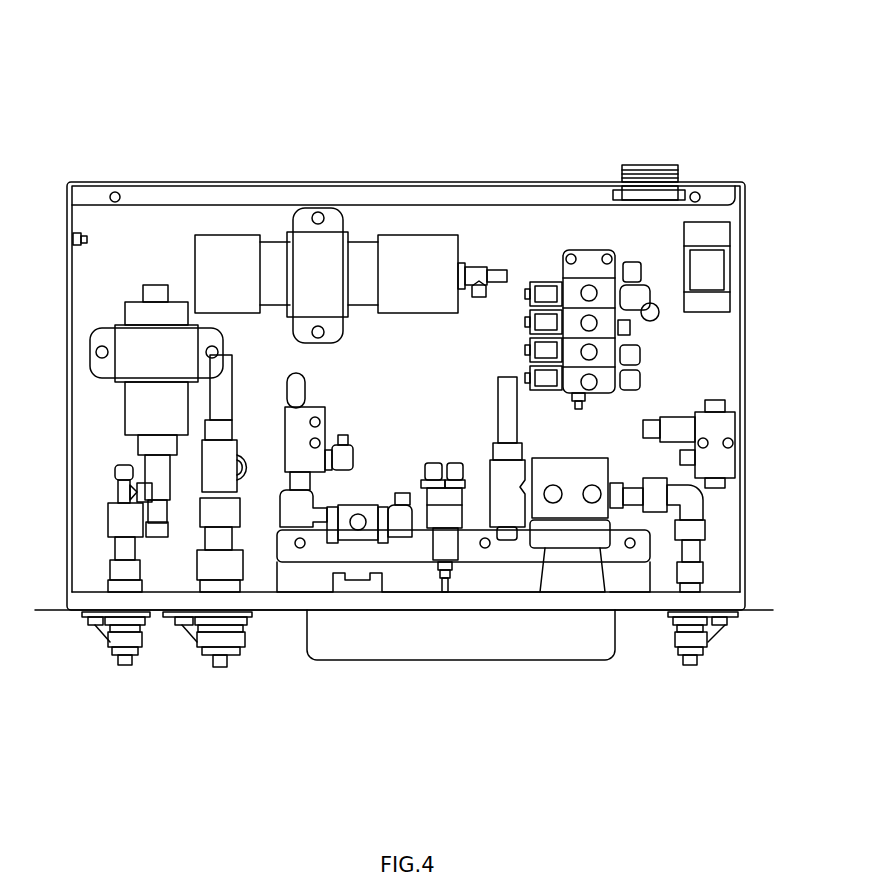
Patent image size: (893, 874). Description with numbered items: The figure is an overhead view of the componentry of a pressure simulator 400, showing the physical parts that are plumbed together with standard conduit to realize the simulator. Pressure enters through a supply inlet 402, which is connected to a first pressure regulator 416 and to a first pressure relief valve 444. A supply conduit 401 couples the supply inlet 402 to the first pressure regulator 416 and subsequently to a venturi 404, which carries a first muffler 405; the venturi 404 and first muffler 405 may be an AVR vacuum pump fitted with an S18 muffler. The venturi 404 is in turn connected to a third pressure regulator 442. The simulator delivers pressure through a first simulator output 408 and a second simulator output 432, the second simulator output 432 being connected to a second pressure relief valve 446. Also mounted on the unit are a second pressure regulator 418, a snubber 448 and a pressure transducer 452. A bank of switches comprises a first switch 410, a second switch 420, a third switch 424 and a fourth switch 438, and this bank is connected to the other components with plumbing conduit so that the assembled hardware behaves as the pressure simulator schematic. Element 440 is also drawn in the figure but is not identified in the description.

The pressure simulator 400 is at (90, 92).
The supply conduit 401 is at (700, 545).
The supply inlet 402 is at (700, 655).
The venturi 404 is at (328, 418).
The first muffler 405 is at (305, 388).
The first simulator output 408 is at (132, 668).
The first switch 410 is at (528, 364).
The first pressure regulator 416 is at (597, 520).
The second pressure regulator 418 is at (446, 565).
The second switch 420 is at (530, 343).
The third switch 424 is at (530, 313).
The second simulator output 432 is at (222, 670).
The fourth switch 438 is at (546, 283).
The filter assembly 440 is at (423, 250).
The third pressure regulator 442 is at (357, 575).
The first pressure relief valve 444 is at (508, 506).
The second pressure relief valve 446 is at (232, 388).
The snubber 448 is at (727, 424).
The pressure transducer 452 is at (125, 344).